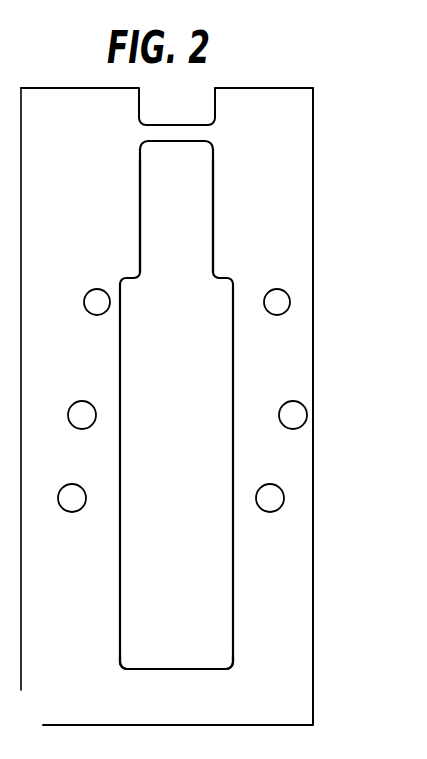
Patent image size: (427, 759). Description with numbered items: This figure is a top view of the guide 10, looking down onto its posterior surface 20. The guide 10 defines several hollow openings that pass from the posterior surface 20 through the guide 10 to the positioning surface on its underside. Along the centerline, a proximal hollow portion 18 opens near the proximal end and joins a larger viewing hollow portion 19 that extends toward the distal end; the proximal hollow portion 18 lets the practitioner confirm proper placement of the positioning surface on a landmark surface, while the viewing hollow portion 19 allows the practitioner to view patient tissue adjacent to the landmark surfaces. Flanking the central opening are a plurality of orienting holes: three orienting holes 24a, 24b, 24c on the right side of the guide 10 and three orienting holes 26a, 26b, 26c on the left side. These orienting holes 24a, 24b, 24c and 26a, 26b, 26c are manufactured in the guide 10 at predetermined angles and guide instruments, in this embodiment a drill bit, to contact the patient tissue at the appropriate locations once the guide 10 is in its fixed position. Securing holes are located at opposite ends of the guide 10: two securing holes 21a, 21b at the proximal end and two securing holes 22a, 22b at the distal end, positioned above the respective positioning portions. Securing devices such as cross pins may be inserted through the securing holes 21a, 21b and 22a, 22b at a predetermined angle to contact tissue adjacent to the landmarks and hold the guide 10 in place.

The guide 10 is at (337, 182).
The proximal hollow portion 18 is at (213, 180).
The viewing hollow portion 19 is at (233, 345).
The posterior surface 20 is at (297, 220).
The securing hole 21a is at (227, 224).
The securing hole 21b is at (135, 230).
The securing hole 22a is at (212, 694).
The securing hole 22b is at (152, 698).
The orienting hole 24a is at (291, 304).
The orienting hole 24b is at (307, 415).
The orienting hole 24c is at (285, 497).
The orienting hole 26a is at (84, 297).
The orienting hole 26b is at (70, 413).
The orienting hole 26c is at (60, 498).